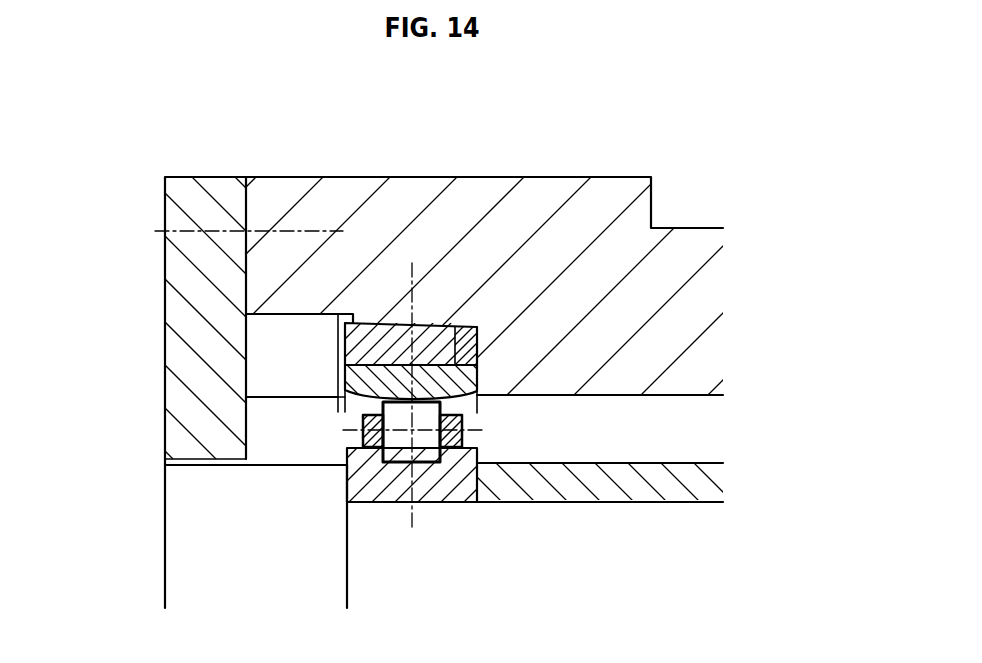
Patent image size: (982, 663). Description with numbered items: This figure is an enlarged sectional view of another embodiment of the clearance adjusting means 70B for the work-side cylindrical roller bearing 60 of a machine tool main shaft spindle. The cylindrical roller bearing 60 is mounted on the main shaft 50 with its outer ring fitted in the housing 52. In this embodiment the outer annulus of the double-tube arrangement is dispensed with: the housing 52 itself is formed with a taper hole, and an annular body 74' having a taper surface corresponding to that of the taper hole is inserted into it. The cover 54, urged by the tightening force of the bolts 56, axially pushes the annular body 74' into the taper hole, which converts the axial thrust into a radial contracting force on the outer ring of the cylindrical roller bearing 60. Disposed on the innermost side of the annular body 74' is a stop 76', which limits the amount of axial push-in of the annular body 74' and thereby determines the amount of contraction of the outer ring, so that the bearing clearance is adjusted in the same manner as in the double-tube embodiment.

The main shaft 50 is at (200, 539).
The housing 52 is at (610, 200).
The cover 54 is at (217, 190).
The bolts 56 is at (293, 222).
The cylindrical roller bearing 60 is at (450, 514).
The clearance adjusting means 70B is at (266, 347).
The annular body 74' is at (412, 240).
The stop 76' is at (410, 258).